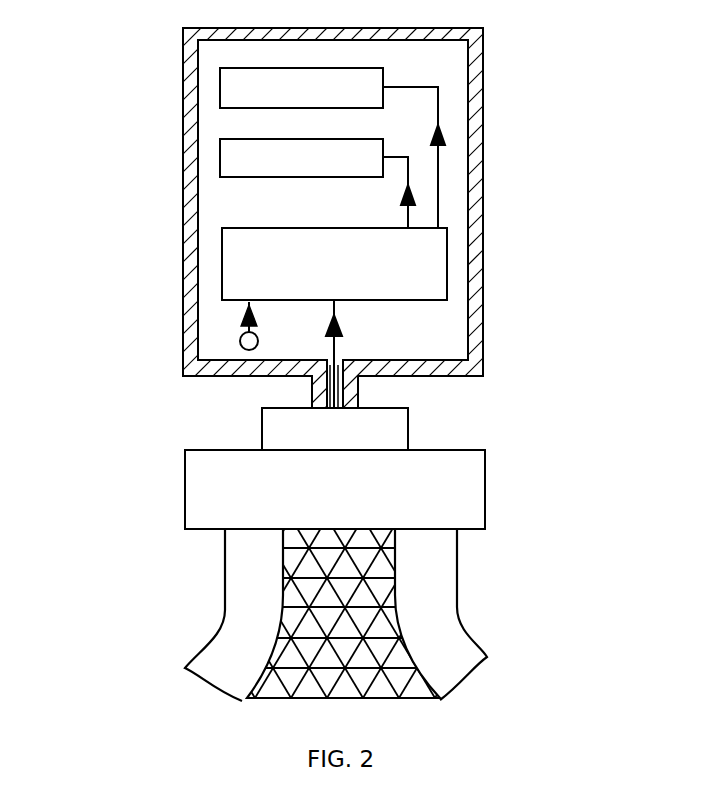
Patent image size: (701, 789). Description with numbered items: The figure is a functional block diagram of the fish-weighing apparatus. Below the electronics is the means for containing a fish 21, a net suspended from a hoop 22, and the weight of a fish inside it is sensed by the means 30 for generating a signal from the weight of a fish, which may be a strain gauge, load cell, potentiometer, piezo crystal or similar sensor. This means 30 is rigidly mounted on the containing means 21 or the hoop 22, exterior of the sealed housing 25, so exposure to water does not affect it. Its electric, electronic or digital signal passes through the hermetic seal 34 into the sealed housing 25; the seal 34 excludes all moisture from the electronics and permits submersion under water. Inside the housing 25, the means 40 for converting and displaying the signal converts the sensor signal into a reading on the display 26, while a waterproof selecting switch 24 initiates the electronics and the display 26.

The means for containing a fish 21 is at (333, 650).
The hoop 22 is at (460, 648).
The waterproof selecting switch 24 is at (241, 340).
The sealed housing 25 is at (473, 108).
The display 26 is at (233, 80).
The means for generating a signal from the weight of a fish 30 is at (270, 423).
The hermetic seal 34 is at (358, 392).
The means for converting and displaying the signal 40 is at (460, 266).